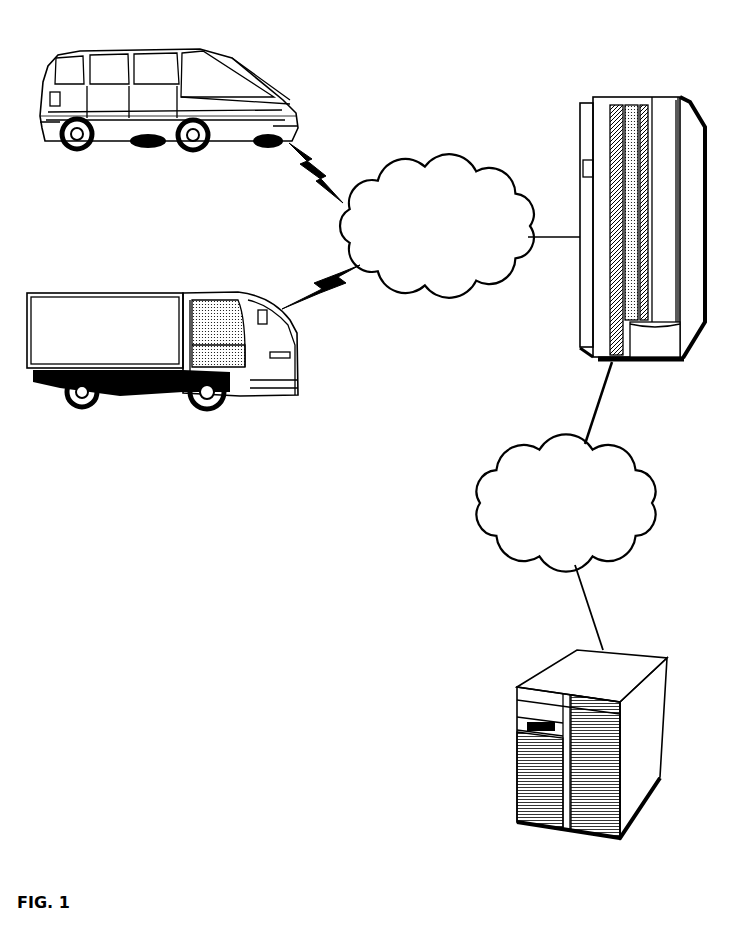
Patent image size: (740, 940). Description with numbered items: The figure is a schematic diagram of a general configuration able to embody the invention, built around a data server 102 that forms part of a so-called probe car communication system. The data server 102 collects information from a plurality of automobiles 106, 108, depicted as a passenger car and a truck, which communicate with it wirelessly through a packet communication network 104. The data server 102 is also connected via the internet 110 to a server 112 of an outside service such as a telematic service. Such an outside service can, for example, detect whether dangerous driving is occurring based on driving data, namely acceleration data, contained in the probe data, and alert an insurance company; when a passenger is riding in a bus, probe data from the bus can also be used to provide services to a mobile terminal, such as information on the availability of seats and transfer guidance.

The data server 102 is at (621, 97).
The packet communication network 104 is at (416, 248).
The automobile 106 is at (155, 48).
The automobile 108 is at (135, 292).
The internet 110 is at (551, 527).
The server of an outside service 112 is at (516, 742).